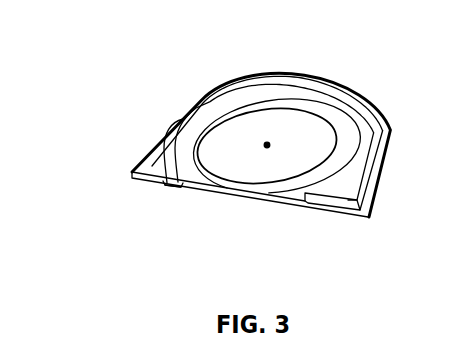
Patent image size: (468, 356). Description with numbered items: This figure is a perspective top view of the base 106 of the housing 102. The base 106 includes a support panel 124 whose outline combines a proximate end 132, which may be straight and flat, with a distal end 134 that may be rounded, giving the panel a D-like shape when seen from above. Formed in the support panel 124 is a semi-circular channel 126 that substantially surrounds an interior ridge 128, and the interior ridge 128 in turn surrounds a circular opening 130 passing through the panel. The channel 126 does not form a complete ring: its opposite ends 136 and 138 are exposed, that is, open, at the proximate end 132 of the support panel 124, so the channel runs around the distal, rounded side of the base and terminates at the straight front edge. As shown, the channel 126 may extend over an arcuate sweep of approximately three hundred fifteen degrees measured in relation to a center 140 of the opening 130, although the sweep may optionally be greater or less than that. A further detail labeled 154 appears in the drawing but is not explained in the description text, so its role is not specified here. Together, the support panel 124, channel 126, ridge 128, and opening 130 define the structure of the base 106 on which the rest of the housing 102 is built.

The housing 102 is at (187, 56).
The base 106 is at (132, 172).
The support panel 124 is at (374, 216).
The semi-circular channel 126 is at (168, 187).
The interior ridge 128 is at (250, 99).
The circular opening 130 is at (290, 138).
The proximate end 132 is at (281, 199).
The distal end 134 is at (288, 77).
The end of channel 136 is at (168, 183).
The end of channel 138 is at (312, 197).
The center of opening 140 is at (267, 145).
The annular ring 154 is at (218, 122).